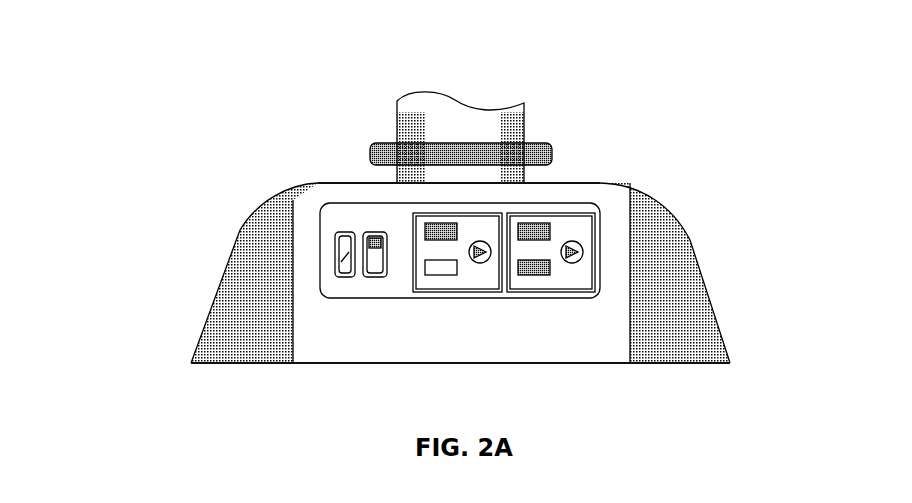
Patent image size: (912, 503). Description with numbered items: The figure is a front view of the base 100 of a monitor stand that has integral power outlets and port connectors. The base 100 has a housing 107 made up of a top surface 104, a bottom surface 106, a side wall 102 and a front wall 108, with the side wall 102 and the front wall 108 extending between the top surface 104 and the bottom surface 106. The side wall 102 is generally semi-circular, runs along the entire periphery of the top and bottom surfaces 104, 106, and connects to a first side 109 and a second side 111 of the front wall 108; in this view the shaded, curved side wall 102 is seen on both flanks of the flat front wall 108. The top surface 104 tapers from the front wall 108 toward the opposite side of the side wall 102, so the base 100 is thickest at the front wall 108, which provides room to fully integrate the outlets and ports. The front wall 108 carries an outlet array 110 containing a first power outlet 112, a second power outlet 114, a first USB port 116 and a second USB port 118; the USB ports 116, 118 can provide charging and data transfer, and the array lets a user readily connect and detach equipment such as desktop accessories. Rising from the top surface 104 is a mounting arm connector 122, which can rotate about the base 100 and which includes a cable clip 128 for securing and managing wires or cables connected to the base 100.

The base 100 is at (230, 128).
The side wall 102 is at (690, 265).
The top surface 104 is at (580, 183).
The bottom surface 106 is at (660, 366).
The housing 107 is at (724, 238).
The front wall 108 is at (307, 291).
The first side 109 is at (288, 253).
The outlet array 110 is at (333, 206).
The second side 111 is at (633, 343).
The first power outlet 112 is at (558, 245).
The second power outlet 114 is at (470, 278).
The first USB port 116 is at (350, 277).
The second USB port 118 is at (379, 277).
The mounting arm connector 122 is at (405, 128).
The cable clip 128 is at (538, 143).